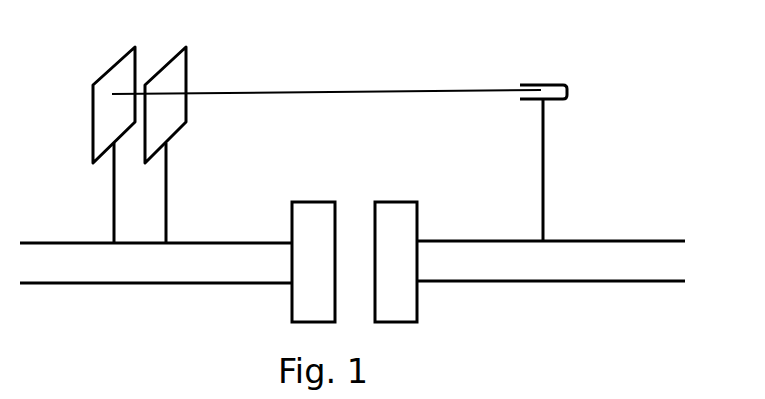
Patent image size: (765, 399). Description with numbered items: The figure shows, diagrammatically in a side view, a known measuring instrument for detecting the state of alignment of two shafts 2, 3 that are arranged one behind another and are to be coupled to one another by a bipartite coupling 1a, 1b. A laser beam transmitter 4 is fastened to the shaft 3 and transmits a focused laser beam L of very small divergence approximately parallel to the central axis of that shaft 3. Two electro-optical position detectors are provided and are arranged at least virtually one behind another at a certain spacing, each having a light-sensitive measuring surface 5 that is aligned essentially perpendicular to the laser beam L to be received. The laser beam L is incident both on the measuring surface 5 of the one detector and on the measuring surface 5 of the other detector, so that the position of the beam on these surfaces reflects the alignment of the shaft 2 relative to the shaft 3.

The coupling half 1a is at (310, 220).
The coupling half 1b is at (392, 218).
The shaft 2 is at (198, 263).
The shaft 3 is at (455, 268).
The laser beam transmitter 4 is at (557, 83).
The light-sensitive measuring surface 5 is at (167, 73).
The laser beam L is at (378, 90).